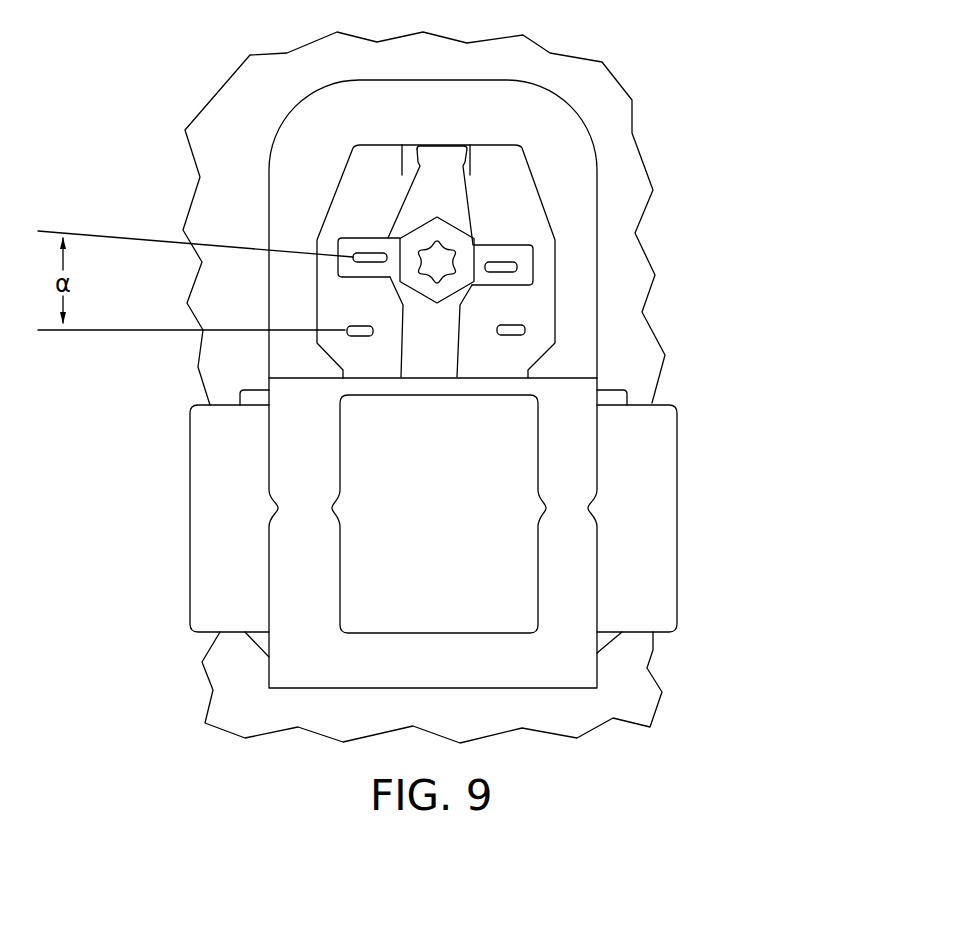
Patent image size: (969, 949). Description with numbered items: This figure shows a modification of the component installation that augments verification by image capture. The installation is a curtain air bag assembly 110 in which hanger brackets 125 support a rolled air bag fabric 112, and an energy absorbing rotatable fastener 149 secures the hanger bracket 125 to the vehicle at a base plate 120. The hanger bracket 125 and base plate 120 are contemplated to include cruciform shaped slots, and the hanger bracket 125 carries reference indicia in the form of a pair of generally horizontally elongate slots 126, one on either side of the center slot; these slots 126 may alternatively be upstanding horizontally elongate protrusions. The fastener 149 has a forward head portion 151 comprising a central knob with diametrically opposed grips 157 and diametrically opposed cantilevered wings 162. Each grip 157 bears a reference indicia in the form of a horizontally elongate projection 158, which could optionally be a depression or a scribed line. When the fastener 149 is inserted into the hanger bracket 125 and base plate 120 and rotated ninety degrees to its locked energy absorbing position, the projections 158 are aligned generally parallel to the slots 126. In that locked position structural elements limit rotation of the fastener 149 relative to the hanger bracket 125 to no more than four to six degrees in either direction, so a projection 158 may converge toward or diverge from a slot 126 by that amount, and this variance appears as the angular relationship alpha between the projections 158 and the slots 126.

The curtain air bag assembly 110 is at (190, 392).
The rolled air bag fabric 112 is at (645, 597).
The base plate 120 is at (246, 97).
The hanger bracket 125 is at (268, 212).
The horizontally elongate slots 126 is at (349, 330).
The energy absorbing rotatable fastener 149 is at (473, 227).
The forward head portion 151 is at (463, 248).
The grips 157 is at (533, 254).
The horizontally elongate projection 158 is at (363, 258).
The cantilevered wings 162 is at (430, 342).